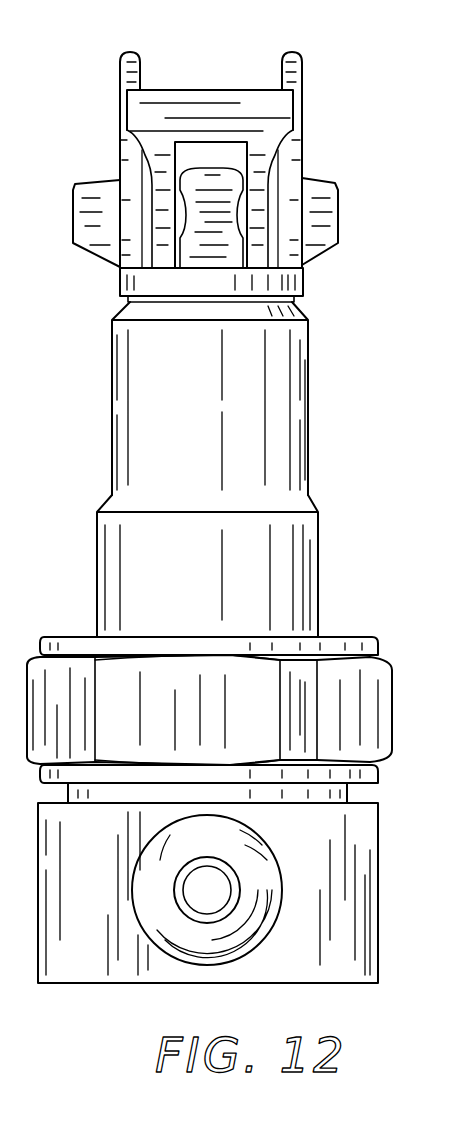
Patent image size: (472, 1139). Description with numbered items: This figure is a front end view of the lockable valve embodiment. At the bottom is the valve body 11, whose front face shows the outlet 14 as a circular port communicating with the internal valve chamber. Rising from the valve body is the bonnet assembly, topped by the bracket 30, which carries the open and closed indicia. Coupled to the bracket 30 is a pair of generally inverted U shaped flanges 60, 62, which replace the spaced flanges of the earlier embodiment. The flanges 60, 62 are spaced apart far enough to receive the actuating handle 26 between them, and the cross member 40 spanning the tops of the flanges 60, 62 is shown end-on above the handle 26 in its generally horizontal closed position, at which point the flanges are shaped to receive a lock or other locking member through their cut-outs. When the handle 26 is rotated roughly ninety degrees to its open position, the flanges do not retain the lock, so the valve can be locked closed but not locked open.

The valve body 11 is at (358, 860).
The outlet 14 is at (158, 925).
The actuating handle 26 is at (98, 192).
The bracket 30 is at (303, 281).
The cross bar 40 is at (221, 96).
The U shaped flange 60 is at (122, 73).
The U shaped flange 62 is at (305, 72).